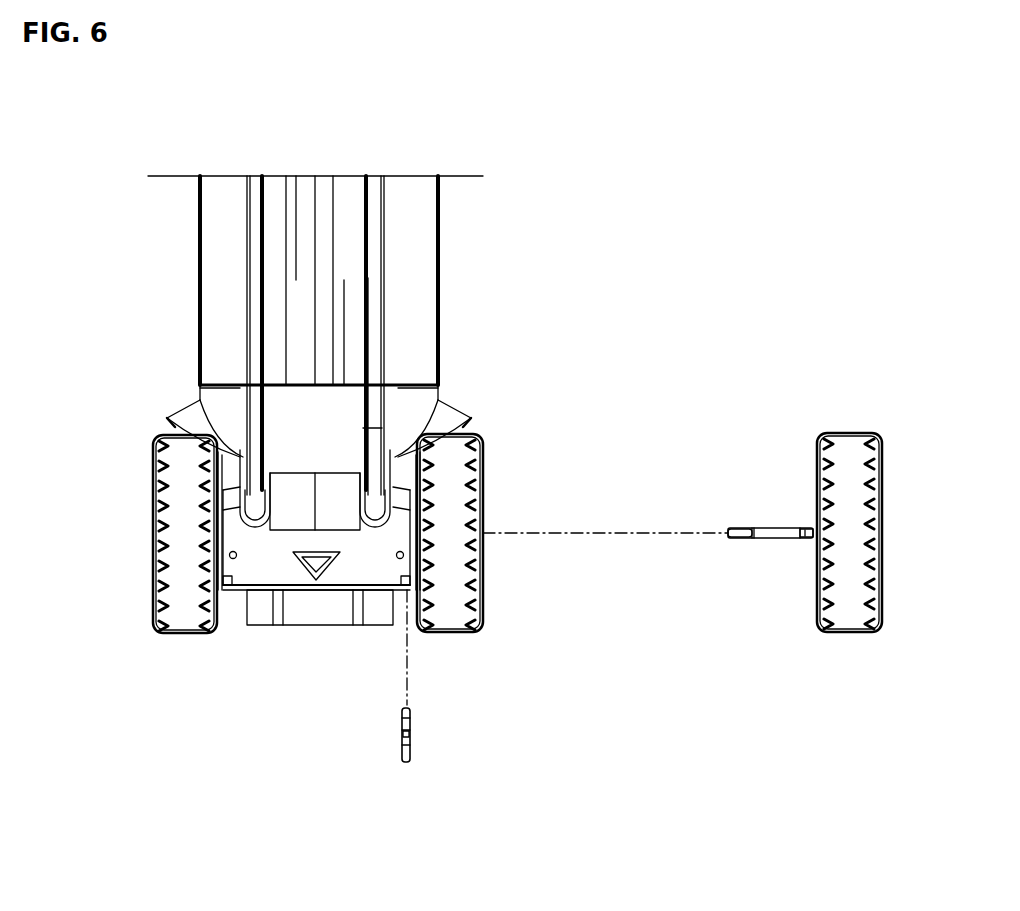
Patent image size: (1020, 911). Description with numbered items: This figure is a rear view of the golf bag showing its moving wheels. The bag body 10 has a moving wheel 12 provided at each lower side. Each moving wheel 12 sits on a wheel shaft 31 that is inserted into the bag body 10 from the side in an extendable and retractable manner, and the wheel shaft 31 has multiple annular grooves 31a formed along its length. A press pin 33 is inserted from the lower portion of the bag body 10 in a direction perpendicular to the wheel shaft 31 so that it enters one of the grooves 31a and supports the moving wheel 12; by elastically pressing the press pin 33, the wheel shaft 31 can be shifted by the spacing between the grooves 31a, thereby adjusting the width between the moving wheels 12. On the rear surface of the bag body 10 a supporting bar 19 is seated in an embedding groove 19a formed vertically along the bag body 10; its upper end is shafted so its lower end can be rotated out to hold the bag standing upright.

The bag body 10 is at (448, 302).
The moving wheel 12 is at (170, 587).
The supporting bar 19 is at (260, 242).
The embedding groove 19a is at (247, 313).
The wheel shaft 31 is at (777, 528).
The annular grooves 31a is at (800, 540).
The press pin 33 is at (400, 757).